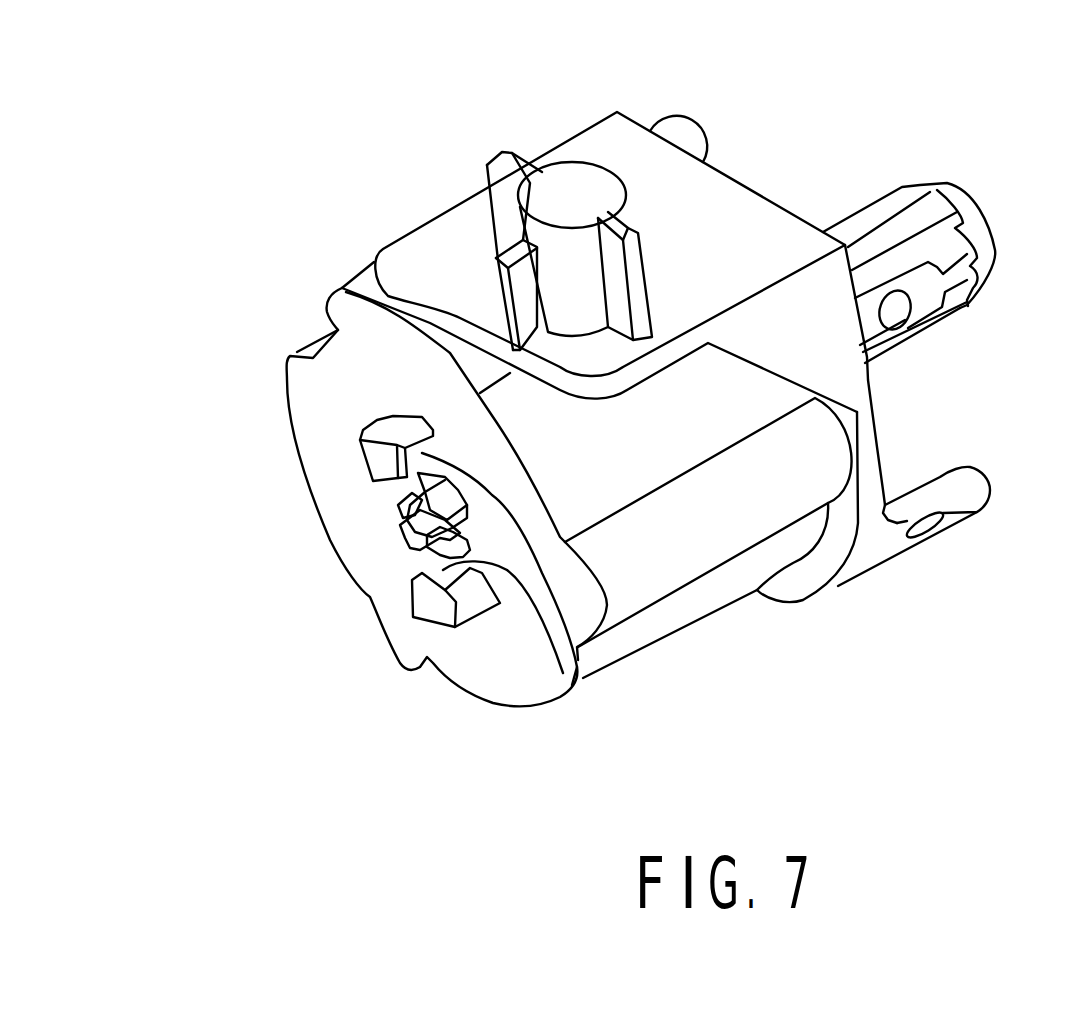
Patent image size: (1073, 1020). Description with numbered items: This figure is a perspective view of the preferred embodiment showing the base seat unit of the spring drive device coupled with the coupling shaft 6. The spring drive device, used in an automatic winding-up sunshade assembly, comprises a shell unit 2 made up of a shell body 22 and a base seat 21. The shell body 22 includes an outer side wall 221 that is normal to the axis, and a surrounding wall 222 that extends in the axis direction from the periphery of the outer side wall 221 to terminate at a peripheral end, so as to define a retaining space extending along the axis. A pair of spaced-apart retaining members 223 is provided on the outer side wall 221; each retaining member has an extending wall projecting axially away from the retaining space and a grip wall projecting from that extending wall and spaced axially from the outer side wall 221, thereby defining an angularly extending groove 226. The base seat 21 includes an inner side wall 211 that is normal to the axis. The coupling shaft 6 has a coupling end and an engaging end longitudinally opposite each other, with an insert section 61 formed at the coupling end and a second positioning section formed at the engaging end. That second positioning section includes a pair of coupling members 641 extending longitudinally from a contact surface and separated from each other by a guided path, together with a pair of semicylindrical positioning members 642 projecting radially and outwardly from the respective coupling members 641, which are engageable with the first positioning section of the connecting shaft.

The shell unit 2 is at (412, 184).
The base seat 21 is at (750, 170).
The inner side wall 211 is at (863, 447).
The shell body 22 is at (277, 393).
The outer side wall 221 is at (335, 375).
The surrounding wall 222 is at (700, 537).
The retaining members 223 is at (377, 457).
The angularly extending groove 226 is at (578, 648).
The coupling shaft 6 is at (988, 178).
The insert section 61 is at (885, 217).
The coupling members 641 is at (425, 528).
The semicylindrical positioning members 642 is at (413, 487).